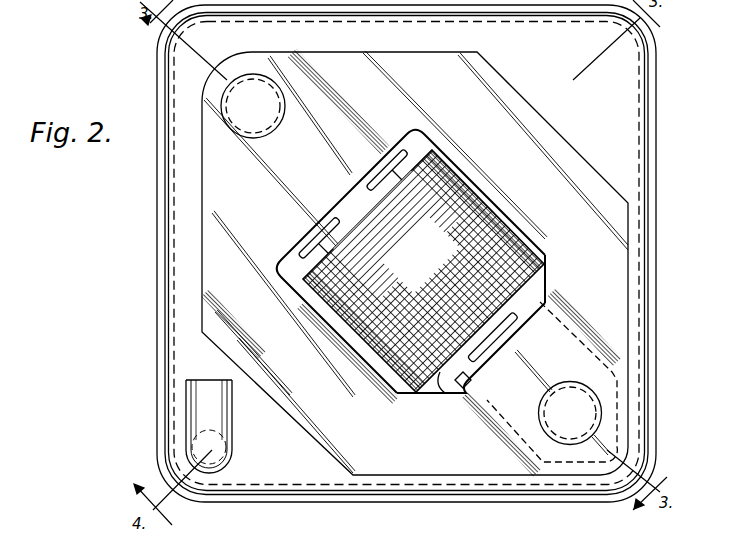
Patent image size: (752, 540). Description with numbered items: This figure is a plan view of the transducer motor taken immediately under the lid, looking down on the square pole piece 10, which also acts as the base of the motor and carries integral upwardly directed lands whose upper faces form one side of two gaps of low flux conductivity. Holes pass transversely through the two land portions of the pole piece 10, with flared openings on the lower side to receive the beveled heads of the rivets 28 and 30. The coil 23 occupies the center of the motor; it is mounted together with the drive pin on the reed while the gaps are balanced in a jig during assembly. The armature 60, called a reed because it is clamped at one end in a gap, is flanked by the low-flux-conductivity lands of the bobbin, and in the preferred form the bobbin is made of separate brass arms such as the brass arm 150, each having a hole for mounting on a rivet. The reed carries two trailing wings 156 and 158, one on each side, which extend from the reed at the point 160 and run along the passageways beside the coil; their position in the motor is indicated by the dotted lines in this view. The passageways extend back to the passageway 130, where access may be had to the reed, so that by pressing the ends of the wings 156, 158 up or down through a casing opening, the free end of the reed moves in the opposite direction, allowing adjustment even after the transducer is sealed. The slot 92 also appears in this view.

The pole piece 10 is at (186, 358).
The brass arm 150 is at (406, 272).
The coil 23 is at (419, 282).
The rivet 28 is at (592, 413).
The rivet 30 is at (262, 118).
The armature 60 is at (475, 372).
The slot 92 is at (235, 430).
The passageway 130 is at (447, 393).
The wing 156 is at (485, 435).
The wing 158 is at (600, 349).
The point 160 is at (546, 280).